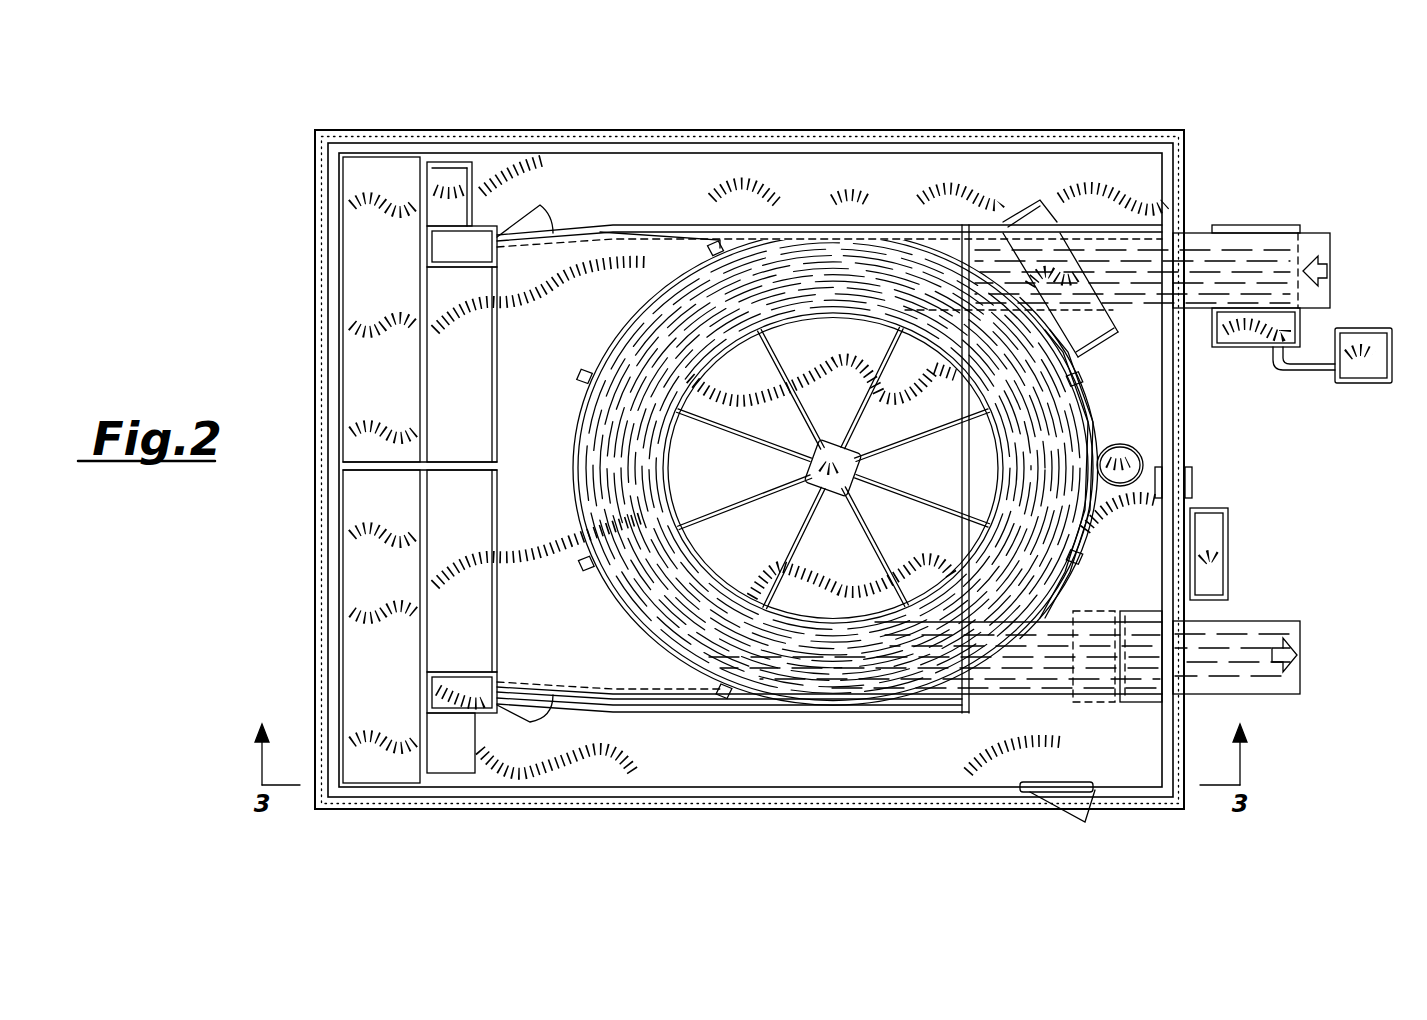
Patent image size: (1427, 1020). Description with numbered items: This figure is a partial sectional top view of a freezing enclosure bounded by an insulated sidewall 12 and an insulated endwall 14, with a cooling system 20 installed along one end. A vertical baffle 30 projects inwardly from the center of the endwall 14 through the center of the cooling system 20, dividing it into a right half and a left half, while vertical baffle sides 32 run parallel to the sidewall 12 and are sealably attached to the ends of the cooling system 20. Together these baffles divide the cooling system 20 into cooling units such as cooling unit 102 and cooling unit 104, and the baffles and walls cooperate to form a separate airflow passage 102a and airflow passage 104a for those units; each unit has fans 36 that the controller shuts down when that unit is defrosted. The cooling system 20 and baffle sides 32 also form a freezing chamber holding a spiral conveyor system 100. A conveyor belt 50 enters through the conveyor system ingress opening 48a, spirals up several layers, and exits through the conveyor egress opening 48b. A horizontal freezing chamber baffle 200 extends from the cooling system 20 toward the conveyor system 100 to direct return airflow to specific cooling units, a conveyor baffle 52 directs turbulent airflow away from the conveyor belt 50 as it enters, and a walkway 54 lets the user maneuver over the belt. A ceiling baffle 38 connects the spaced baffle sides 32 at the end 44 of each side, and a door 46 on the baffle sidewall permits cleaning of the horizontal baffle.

The insulated sidewall 12 is at (850, 148).
The insulated endwall 14 is at (1180, 178).
The cooling system 20 is at (460, 515).
The vertical baffle 30 is at (385, 462).
The vertical baffle side 32 is at (728, 225).
The fan 36 is at (445, 765).
The ceiling baffle 38 is at (970, 240).
The end of vertical baffle side 44 is at (975, 700).
The door 46 is at (508, 703).
The conveyor system ingress opening 48a is at (1178, 240).
The conveyor egress opening 48b is at (1180, 655).
The conveyor belt 50 is at (1312, 250).
The conveyor baffle 52 is at (1075, 222).
The walkway 54 is at (1085, 350).
The conveyor system 100 is at (1097, 422).
The cooling unit 102 is at (355, 655).
The airflow passage 102a is at (678, 770).
The cooling unit 104 is at (365, 235).
The airflow passage 104a is at (622, 187).
The horizontal freezing chamber baffle 200 is at (585, 655).